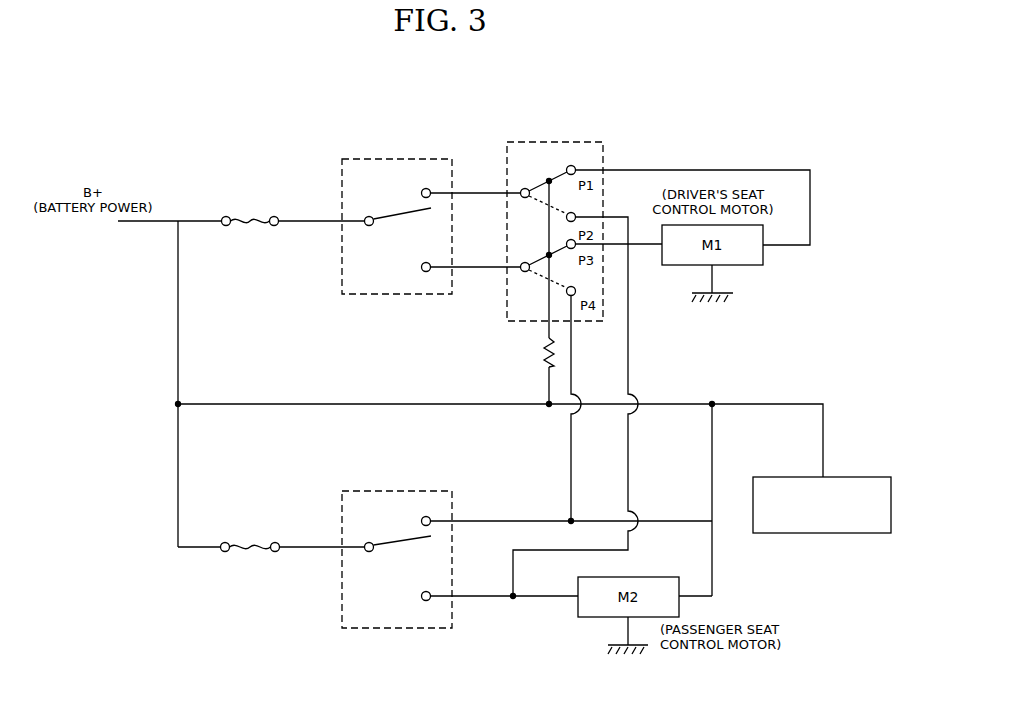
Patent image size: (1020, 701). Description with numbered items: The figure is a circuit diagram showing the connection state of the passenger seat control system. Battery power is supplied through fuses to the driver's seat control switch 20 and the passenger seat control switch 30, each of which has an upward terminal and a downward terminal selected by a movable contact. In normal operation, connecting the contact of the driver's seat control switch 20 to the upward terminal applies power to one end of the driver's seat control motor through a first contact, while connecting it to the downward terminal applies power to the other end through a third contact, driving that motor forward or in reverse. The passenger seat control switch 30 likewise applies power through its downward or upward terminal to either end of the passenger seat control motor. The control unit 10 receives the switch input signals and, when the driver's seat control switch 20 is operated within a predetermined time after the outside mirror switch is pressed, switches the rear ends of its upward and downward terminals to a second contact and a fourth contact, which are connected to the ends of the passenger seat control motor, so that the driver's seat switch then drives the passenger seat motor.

The control unit 10 is at (891, 505).
The driver's seat control switch 20 is at (421, 207).
The passenger seat control switch 30 is at (517, 540).